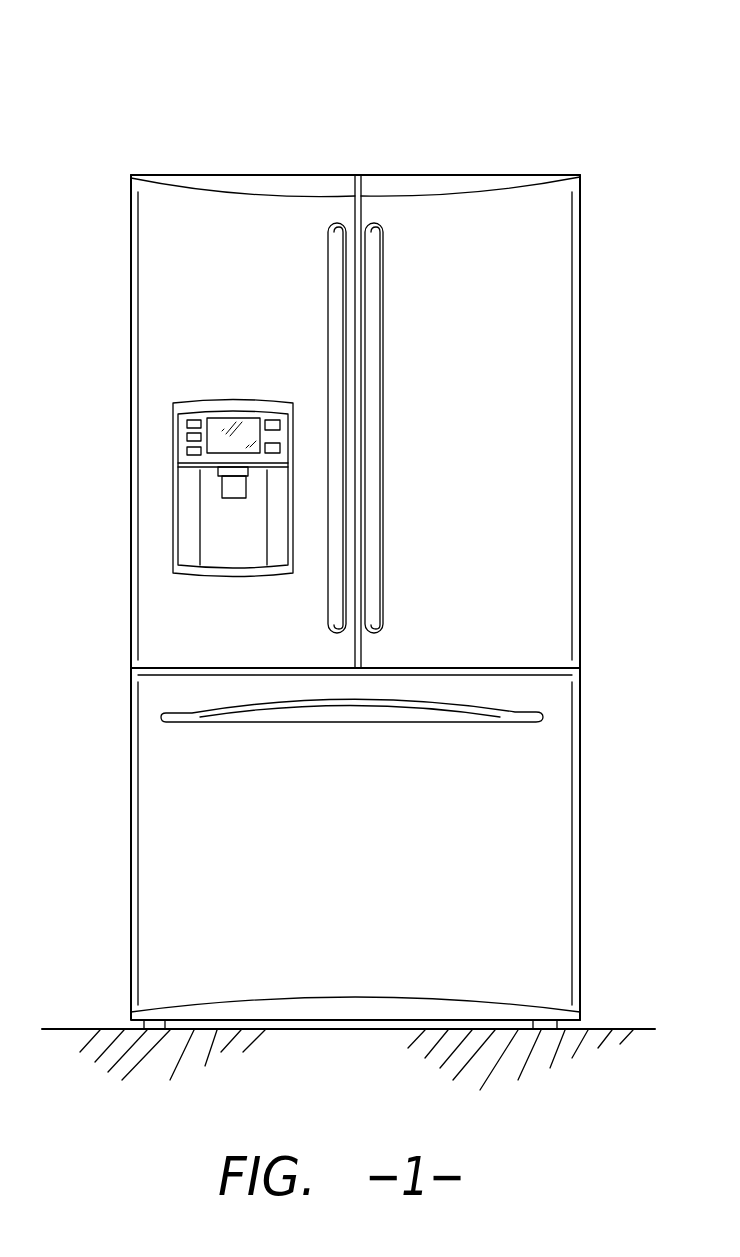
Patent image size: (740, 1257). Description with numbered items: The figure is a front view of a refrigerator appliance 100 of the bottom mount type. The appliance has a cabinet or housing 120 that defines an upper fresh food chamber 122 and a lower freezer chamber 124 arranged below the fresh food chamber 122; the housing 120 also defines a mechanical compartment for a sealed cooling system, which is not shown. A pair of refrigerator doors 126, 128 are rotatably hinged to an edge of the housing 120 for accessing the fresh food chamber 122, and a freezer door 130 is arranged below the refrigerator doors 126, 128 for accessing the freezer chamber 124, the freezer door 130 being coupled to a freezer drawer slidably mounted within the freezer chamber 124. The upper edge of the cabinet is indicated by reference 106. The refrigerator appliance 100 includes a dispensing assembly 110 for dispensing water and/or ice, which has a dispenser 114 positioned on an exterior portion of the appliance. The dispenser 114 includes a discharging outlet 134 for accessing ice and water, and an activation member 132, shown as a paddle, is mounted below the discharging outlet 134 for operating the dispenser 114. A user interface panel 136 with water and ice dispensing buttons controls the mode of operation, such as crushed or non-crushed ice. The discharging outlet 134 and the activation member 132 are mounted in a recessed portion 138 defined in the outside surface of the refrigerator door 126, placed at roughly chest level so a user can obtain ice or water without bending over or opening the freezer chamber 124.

The refrigerator appliance 100 is at (567, 93).
The cabinet 106 is at (596, 176).
The dispensing assembly 110 is at (188, 372).
The dispenser 114 is at (228, 530).
The cabinet or housing 120 is at (125, 857).
The fresh food chamber 122 is at (547, 430).
The freezer chamber 124 is at (546, 798).
The refrigerator door 126 is at (160, 268).
The refrigerator door 128 is at (557, 310).
The freezer door 130 is at (545, 903).
The activation member 132 is at (227, 478).
The discharging outlet 134 is at (229, 492).
The user interface panel 136 is at (186, 437).
The recessed portion 138 is at (248, 553).